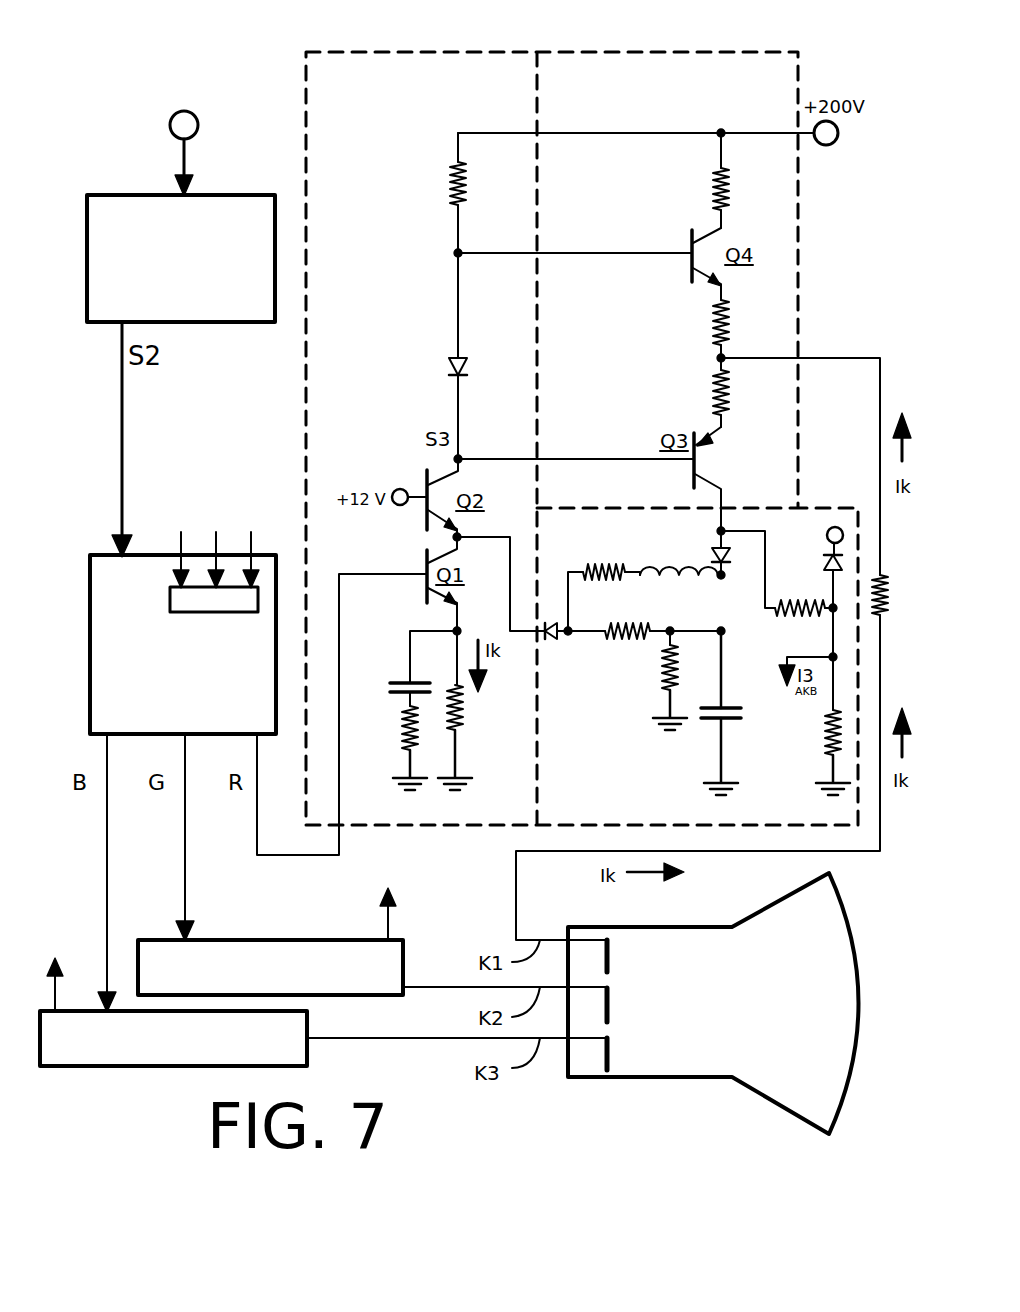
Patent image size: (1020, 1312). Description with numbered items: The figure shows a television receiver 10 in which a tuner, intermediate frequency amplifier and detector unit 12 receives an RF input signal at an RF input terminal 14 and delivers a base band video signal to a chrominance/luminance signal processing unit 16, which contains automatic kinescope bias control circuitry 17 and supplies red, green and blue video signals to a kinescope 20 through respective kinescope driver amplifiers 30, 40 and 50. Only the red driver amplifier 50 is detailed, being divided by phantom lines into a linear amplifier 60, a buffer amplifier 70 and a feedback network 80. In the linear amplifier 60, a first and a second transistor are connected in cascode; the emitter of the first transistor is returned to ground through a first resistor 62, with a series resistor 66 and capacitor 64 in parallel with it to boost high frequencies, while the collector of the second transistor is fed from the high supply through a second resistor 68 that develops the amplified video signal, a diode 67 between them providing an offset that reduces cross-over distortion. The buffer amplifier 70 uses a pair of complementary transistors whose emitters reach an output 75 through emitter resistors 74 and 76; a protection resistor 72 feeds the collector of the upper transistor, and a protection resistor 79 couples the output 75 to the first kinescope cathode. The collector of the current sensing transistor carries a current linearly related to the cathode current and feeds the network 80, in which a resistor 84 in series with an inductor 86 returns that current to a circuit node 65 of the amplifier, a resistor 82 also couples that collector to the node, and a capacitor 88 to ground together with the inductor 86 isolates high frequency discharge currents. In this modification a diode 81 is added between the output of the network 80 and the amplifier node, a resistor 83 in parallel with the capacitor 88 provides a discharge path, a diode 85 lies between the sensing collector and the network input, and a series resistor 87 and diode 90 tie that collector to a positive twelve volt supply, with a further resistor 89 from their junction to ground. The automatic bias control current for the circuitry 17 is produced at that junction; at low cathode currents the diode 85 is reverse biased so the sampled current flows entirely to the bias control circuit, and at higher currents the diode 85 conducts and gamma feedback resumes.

The television receiver 10 is at (218, 50).
The tuner, intermediate frequency amplifier and detector unit 12 is at (148, 193).
The RF input terminal 14 is at (178, 112).
The chrominance/luminance signal processing unit 16 is at (160, 618).
The automatic kinescope bias control circuitry 17 is at (172, 601).
The kinescope 20 is at (702, 1093).
The kinescope driver amplifier 30 is at (147, 1070).
The kinescope driver amplifier 40 is at (255, 940).
The kinescope driver amplifier 50 is at (805, 272).
The linear amplifier 60 is at (487, 107).
The first resistor 62 is at (468, 716).
The capacitor 64 is at (390, 687).
The circuit node 65 is at (452, 626).
The resistor 66 is at (400, 728).
The diode 67 is at (446, 368).
The second resistor 68 is at (446, 193).
The buffer amplifier 70 is at (722, 103).
The protection resistor 72 is at (708, 190).
The emitter resistor 74 is at (708, 328).
The output 75 is at (712, 358).
The emitter resistor 76 is at (710, 396).
The protection resistor 79 is at (892, 600).
The feedback network 80 is at (626, 815).
The diode 81 is at (550, 639).
The resistor 82 is at (640, 622).
The resistor 83 is at (654, 655).
The resistor 84 is at (610, 562).
The diode 85 is at (730, 550).
The inductor 86 is at (695, 568).
The resistor 87 is at (785, 620).
The capacitor 88 is at (712, 722).
The resistor 89 is at (818, 742).
The diode 90 is at (822, 557).